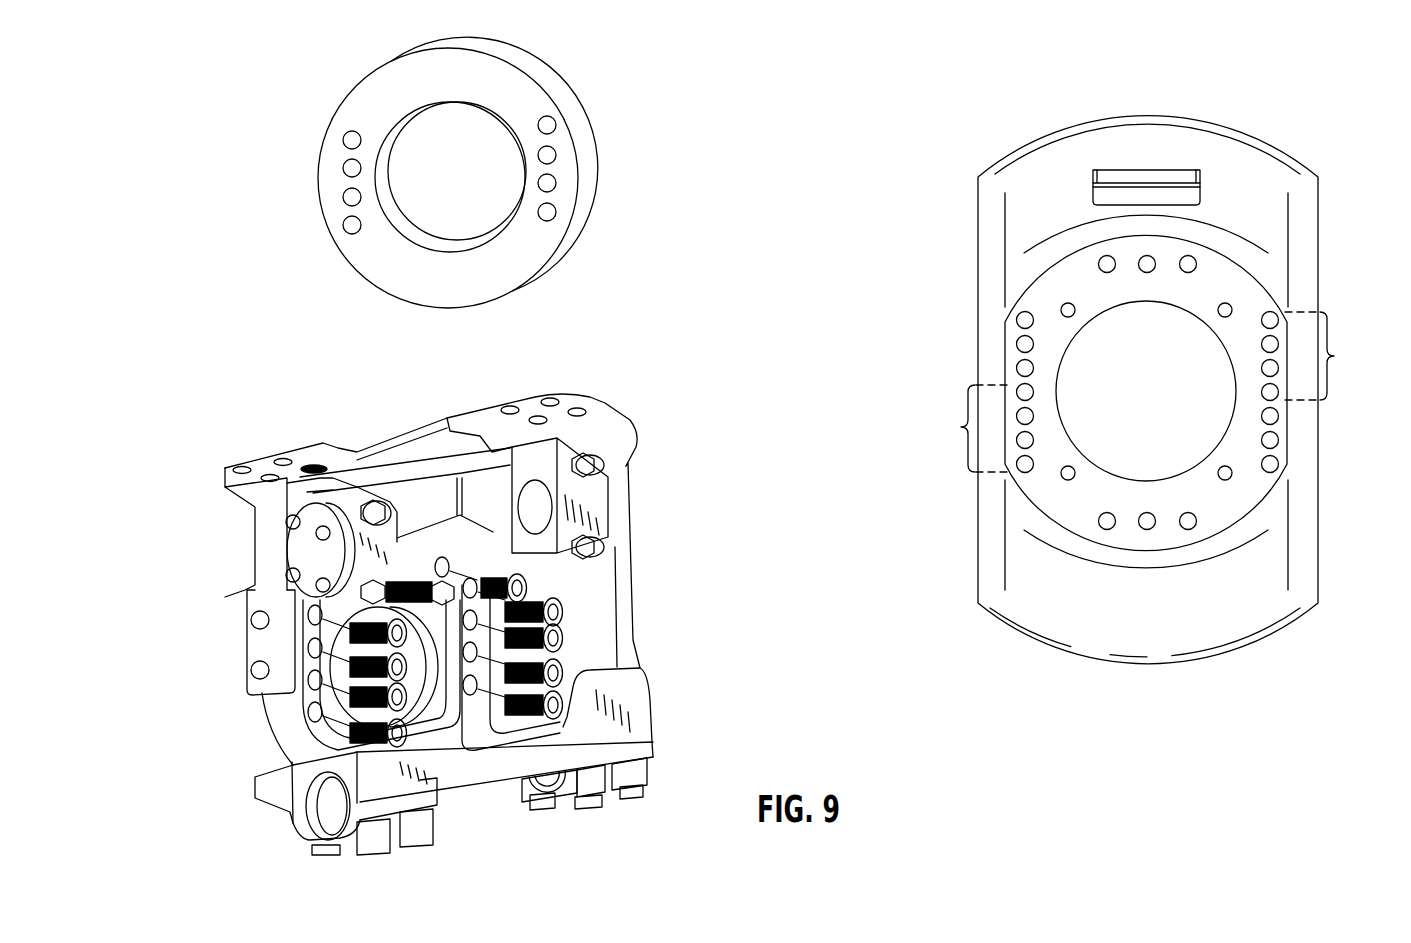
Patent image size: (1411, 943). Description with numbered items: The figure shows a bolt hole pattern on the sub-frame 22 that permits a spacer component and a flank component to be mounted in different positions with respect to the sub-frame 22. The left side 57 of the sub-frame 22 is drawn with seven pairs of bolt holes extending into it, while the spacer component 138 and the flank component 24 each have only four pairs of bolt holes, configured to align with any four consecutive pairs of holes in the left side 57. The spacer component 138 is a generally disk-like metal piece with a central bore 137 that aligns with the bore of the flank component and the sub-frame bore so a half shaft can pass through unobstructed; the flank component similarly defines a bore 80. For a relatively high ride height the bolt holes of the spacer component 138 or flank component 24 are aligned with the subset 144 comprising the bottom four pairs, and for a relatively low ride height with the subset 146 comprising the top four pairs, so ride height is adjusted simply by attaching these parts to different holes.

The sub-frame 22 is at (1267, 148).
The flank component 24 is at (488, 418).
The left side 57 is at (1245, 288).
The bore 80 is at (362, 645).
The central bore 137 is at (442, 165).
The spacer component 138 is at (391, 82).
The subset of bolt holes 144 is at (961, 428).
The subset of bolt holes 146 is at (1336, 356).